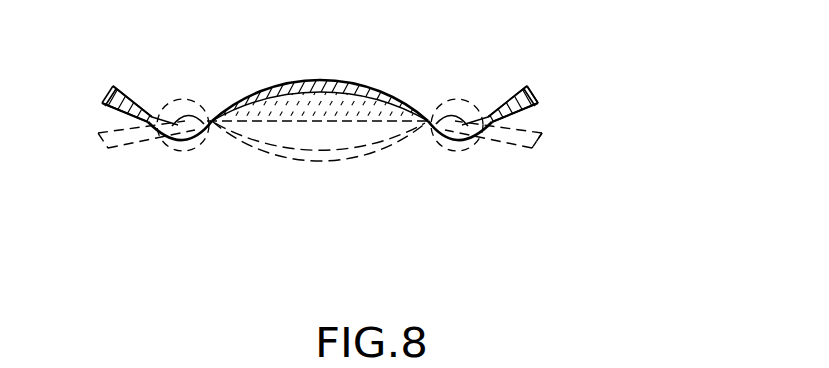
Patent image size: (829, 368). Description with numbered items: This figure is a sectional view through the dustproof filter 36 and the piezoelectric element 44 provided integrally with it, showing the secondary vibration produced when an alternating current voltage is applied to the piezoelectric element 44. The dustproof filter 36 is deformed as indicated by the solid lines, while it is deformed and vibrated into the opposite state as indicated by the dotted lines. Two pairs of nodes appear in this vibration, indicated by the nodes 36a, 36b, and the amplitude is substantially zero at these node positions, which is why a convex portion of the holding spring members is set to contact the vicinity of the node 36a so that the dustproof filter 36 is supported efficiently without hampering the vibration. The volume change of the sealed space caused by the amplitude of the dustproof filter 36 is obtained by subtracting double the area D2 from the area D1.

The dustproof filter 36 is at (532, 90).
The piezoelectric element 44 is at (545, 102).
The node 36a is at (146, 140).
The node 36b is at (208, 140).
The area indicated by numeral D1 is at (323, 94).
The area indicated by numeral D2 is at (182, 122).